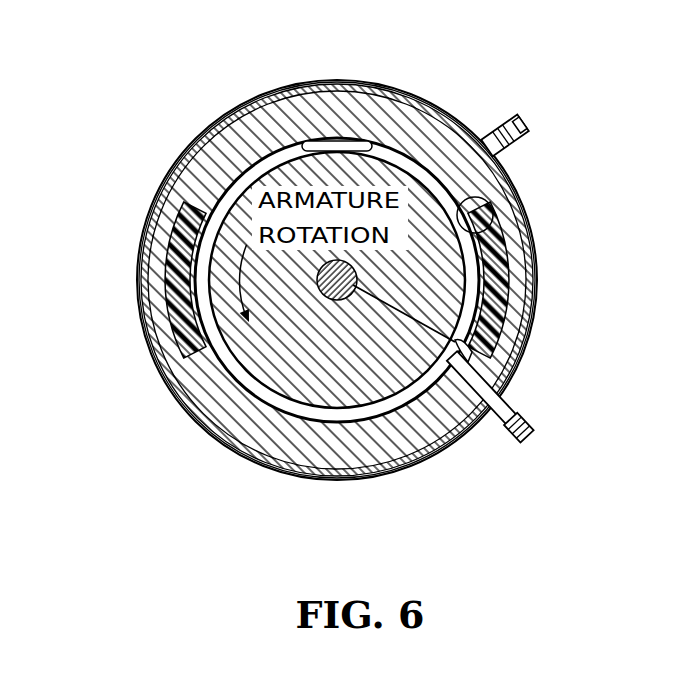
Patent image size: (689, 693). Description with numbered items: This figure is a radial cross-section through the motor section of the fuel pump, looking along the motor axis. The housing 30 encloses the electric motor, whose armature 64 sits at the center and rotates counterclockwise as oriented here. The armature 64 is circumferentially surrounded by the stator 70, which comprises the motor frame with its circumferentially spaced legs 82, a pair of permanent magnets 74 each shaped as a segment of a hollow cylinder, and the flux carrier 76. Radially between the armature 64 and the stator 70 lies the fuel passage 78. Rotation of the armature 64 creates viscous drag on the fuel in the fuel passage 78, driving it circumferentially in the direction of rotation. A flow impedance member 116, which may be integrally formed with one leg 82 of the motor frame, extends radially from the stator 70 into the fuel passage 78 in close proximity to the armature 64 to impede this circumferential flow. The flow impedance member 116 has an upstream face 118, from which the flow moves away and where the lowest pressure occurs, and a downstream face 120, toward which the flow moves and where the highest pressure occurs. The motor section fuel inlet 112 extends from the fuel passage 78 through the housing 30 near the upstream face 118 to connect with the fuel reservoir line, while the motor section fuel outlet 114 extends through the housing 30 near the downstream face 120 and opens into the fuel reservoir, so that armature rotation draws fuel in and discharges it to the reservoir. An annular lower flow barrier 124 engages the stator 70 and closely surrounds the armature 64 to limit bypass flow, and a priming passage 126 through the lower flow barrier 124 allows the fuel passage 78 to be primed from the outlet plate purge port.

The housing 30 is at (447, 442).
The armature 64 is at (400, 152).
The stator 70 is at (212, 150).
The permanent magnets 74 is at (283, 132).
The flux carrier 76 is at (195, 400).
The fuel passage 78 is at (340, 418).
The legs 82 is at (165, 268).
The motor section fuel inlet 112 is at (528, 112).
The motor section fuel outlet 114 is at (527, 405).
The flow impedance member 116 is at (468, 306).
The upstream face 118 is at (462, 198).
The downstream face 120 is at (475, 358).
The lower flow barrier 124 is at (388, 147).
The priming passage 126 is at (320, 140).